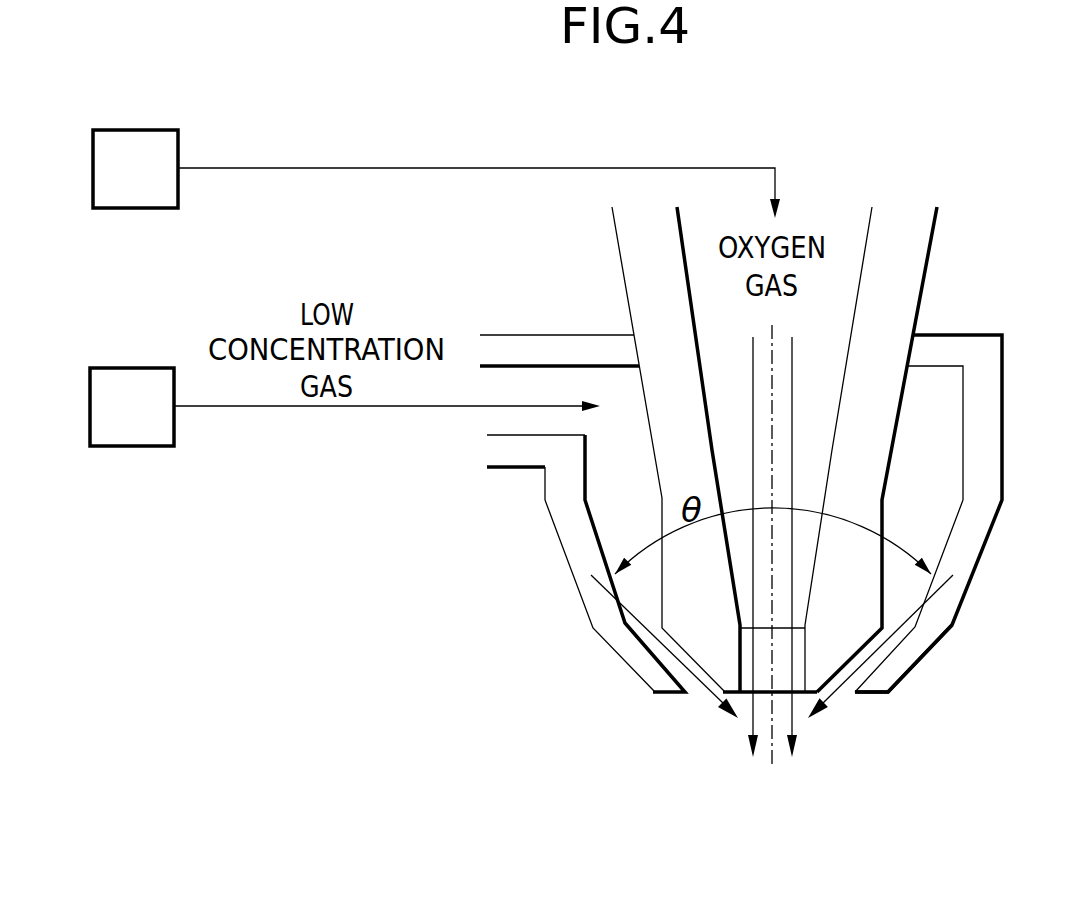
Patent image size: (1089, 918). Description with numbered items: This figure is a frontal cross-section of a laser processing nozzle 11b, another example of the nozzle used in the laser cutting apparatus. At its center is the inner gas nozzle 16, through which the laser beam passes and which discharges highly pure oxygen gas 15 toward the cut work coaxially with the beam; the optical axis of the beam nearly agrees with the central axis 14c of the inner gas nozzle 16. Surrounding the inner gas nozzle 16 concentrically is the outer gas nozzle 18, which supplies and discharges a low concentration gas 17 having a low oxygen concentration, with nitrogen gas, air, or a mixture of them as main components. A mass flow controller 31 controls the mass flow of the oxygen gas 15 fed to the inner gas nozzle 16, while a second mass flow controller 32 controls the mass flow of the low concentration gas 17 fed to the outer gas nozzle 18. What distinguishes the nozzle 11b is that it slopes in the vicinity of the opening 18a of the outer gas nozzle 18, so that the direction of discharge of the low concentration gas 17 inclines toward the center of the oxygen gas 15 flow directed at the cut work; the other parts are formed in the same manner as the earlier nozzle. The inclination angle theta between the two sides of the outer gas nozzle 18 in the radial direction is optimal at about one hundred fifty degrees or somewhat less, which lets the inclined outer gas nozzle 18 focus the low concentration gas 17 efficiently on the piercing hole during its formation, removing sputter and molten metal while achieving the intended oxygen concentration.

The nozzle 11b is at (960, 255).
The central axis 14c is at (770, 757).
The oxygen gas 15 is at (750, 725).
The inner gas nozzle 16 is at (797, 700).
The low concentration gas 17 is at (830, 697).
The outer gas nozzle 18 is at (943, 512).
The opening 18a is at (857, 673).
The mass flow controller 31 is at (178, 141).
The mass flow controller 32 is at (150, 447).